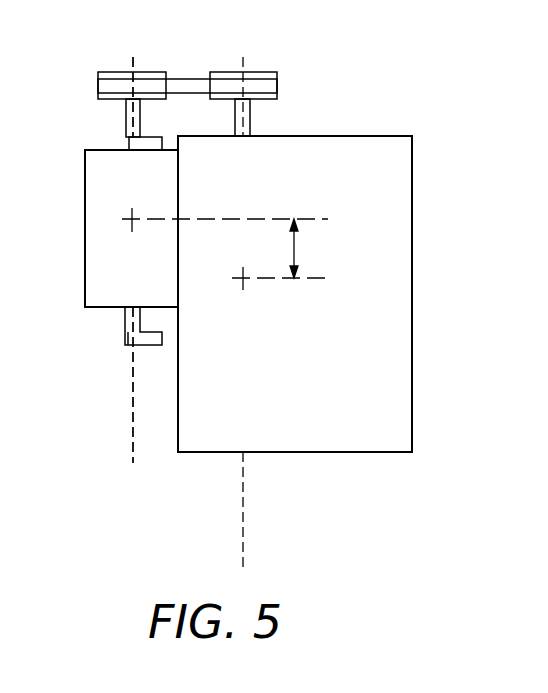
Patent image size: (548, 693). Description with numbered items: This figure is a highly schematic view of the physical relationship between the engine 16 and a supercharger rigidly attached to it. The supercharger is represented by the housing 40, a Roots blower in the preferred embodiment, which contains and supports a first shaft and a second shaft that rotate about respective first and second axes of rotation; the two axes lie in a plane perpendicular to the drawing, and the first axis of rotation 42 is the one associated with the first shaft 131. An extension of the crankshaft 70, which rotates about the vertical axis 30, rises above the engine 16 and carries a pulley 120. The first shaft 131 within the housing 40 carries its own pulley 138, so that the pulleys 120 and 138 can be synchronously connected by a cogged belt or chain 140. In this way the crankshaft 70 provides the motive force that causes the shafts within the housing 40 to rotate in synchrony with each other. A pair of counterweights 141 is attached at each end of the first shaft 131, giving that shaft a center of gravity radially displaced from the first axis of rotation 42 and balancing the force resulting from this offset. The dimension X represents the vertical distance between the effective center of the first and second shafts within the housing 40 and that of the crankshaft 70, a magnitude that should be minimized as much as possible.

The engine 16 is at (400, 163).
The housing 40 is at (88, 173).
The cogged belt or chain 140 is at (182, 78).
The pulley 138 is at (108, 73).
The pulley 120 is at (262, 72).
The first shaft 131 is at (125, 117).
The crankshaft 70 is at (252, 118).
The counterweights 141 is at (147, 134).
The first axis of rotation 42 is at (132, 435).
The vertical axis 30 is at (245, 527).
The dimension X is at (295, 248).